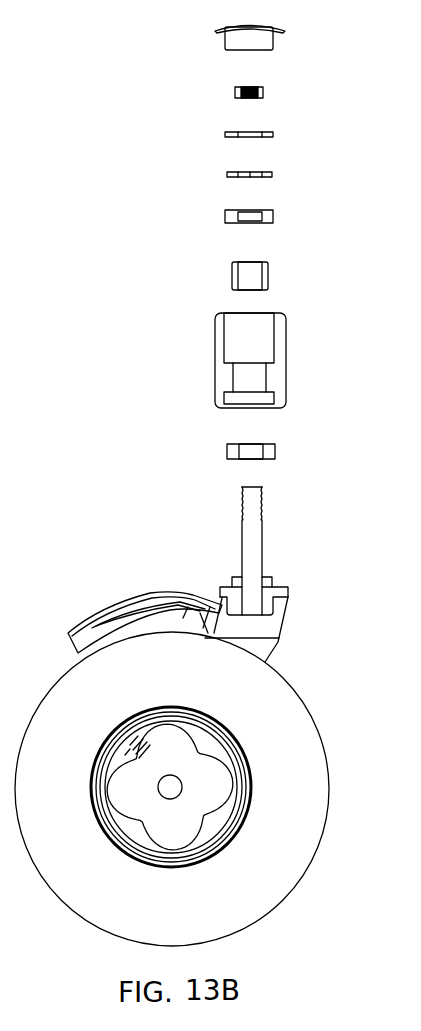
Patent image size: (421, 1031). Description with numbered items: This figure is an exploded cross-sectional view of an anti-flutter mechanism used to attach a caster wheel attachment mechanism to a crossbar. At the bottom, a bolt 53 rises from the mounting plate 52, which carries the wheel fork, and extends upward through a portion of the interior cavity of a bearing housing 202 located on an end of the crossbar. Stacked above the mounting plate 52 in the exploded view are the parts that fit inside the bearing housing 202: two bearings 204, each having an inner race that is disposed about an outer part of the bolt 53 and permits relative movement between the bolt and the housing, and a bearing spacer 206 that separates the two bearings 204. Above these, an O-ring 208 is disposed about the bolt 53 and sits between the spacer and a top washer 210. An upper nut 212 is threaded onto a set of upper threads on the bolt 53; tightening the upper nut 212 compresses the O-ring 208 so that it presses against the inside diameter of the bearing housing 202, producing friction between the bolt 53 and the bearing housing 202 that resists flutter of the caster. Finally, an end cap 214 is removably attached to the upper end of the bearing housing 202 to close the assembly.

The end cap 214 is at (272, 38).
The upper nut 212 is at (263, 92).
The top washer 210 is at (277, 134).
The O-ring 208 is at (278, 174).
The bearings 204 is at (275, 216).
The bearing spacer 206 is at (270, 275).
The bearing housing 202 is at (282, 366).
The bolt 53 is at (258, 553).
The mounting plate 52 is at (277, 589).